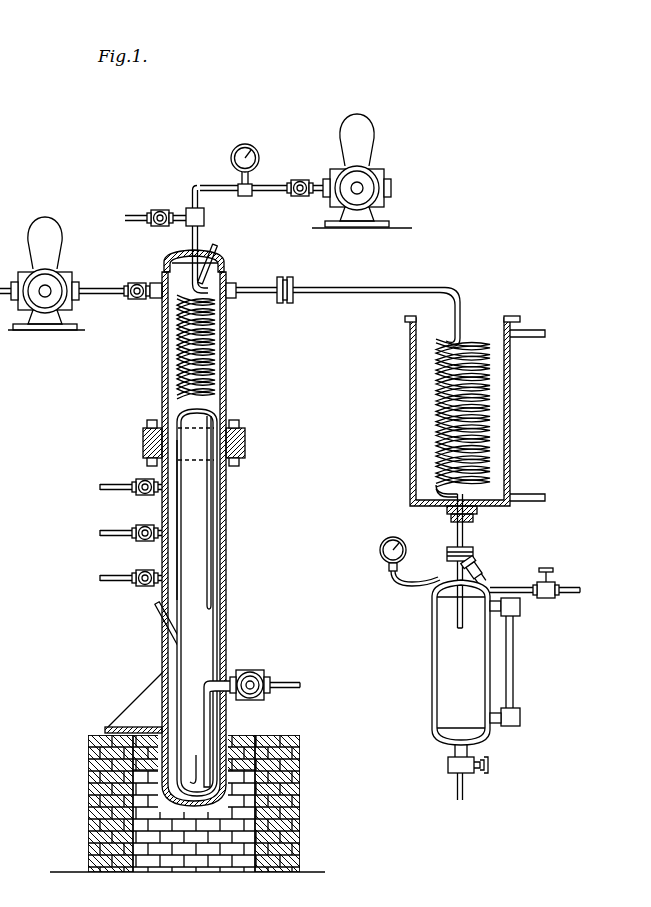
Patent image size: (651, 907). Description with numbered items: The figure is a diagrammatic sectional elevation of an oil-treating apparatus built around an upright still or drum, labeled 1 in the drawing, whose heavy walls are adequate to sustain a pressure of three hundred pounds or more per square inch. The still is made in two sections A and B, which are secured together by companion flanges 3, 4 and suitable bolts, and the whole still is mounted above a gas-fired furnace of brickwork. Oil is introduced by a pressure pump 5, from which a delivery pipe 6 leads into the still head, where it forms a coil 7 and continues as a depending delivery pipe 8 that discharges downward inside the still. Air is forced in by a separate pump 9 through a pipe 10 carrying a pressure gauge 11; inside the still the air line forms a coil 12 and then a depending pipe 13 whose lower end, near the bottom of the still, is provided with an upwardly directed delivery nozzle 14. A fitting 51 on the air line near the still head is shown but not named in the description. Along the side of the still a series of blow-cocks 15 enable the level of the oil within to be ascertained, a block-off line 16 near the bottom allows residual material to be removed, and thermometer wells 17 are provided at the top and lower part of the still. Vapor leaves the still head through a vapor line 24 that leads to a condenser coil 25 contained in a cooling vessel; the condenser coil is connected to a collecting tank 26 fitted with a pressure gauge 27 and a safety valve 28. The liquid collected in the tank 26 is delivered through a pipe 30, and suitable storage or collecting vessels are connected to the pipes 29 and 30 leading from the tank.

The reaction vessel 1 is at (228, 607).
The companion flange 3 is at (236, 430).
The companion flange 4 is at (236, 458).
The pressure pump 5 is at (56, 234).
The delivery pipe 6 is at (118, 297).
The coil 7 is at (212, 332).
The depending delivery pipe 8 is at (217, 553).
The pump 9 is at (372, 133).
The pipe 10 is at (288, 194).
The pressure gauge 11 is at (258, 153).
The coil 12 is at (218, 300).
The depending pipe 13 is at (176, 508).
The delivery nozzle 14 is at (192, 782).
The blow-cocks 15 is at (101, 486).
The block-off line 16 is at (210, 732).
The thermometer well 17 is at (218, 247).
The vapor line 24 is at (355, 293).
The condenser coil 25 is at (437, 397).
The collecting tank 26 is at (432, 660).
The pressure gauge 27 is at (388, 564).
The safety valve 28 is at (485, 566).
The pipe 29 is at (455, 792).
The pipe 30 is at (498, 590).
The valve 51 is at (185, 210).
The still section A is at (228, 382).
The still section B is at (225, 584).